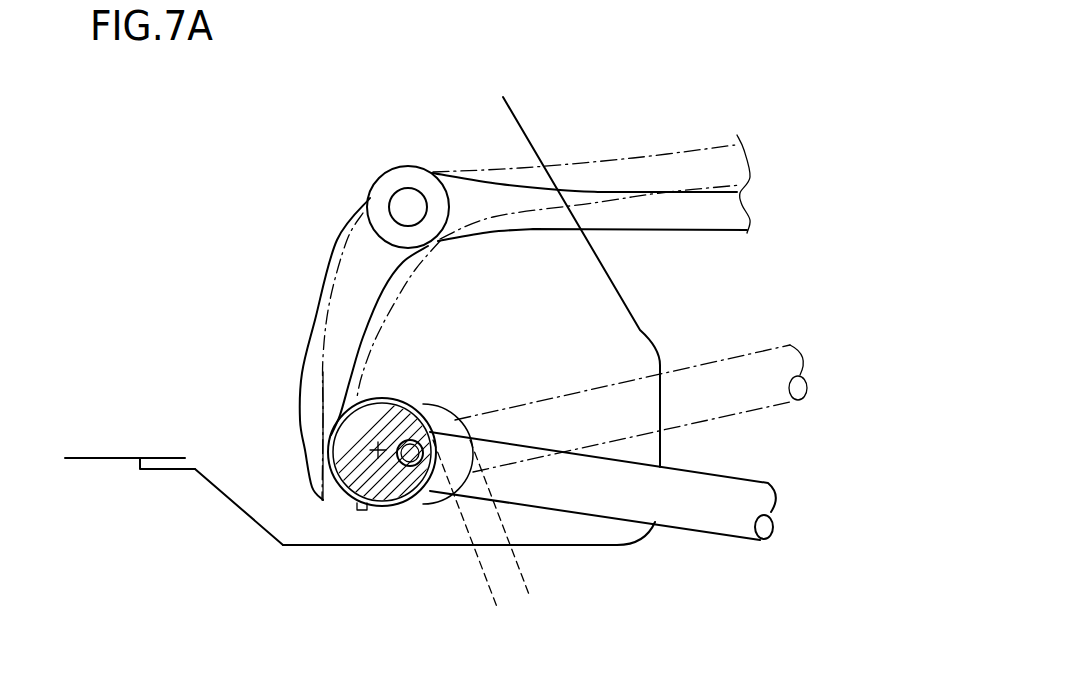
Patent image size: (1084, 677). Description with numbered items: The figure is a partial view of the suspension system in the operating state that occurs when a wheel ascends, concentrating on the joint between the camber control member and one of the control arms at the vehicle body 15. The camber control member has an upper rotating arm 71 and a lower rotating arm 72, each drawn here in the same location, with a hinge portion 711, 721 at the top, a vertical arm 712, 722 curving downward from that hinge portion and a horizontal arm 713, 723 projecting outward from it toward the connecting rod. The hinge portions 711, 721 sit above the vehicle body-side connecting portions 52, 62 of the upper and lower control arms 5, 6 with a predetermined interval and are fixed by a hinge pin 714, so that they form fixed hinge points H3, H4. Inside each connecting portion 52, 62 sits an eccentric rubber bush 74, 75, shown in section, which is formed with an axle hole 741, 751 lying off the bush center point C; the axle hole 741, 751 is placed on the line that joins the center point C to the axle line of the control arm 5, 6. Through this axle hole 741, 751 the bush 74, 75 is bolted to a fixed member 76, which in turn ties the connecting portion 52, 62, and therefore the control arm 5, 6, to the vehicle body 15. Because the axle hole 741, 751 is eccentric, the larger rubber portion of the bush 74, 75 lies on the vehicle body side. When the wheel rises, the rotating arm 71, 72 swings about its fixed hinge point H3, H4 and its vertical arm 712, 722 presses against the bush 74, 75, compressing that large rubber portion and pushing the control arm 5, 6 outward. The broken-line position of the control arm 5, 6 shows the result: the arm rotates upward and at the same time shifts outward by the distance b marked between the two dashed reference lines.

The vehicle body 15 is at (102, 453).
The fixed member 76 is at (213, 470).
The hinge portion 711 is at (408, 173).
The hinge portion 721 is at (405, 175).
The horizontal arm 713 is at (329, 187).
The hinge pin 714 is at (398, 200).
The upper rotating arm 71 is at (591, 151).
The lower rotating arm 72 is at (633, 155).
The horizontal arm 723 is at (680, 225).
The vertical arm 712 is at (300, 349).
The vertical arm 722 is at (316, 320).
The eccentric rubber bush 74 is at (274, 356).
The eccentric rubber bush 75 is at (310, 452).
The vehicle body-side connecting portion 52 is at (410, 447).
The vehicle body-side connecting portion 62 is at (393, 397).
The center point C is at (368, 500).
The axle hole 741 is at (421, 539).
The axle hole 751 is at (413, 510).
The fixed hinge point H3 is at (312, 552).
The fixed hinge point H4 is at (342, 500).
The outward movement distance b is at (547, 567).
The upper control arm 5 is at (615, 478).
The lower control arm 6 is at (713, 520).